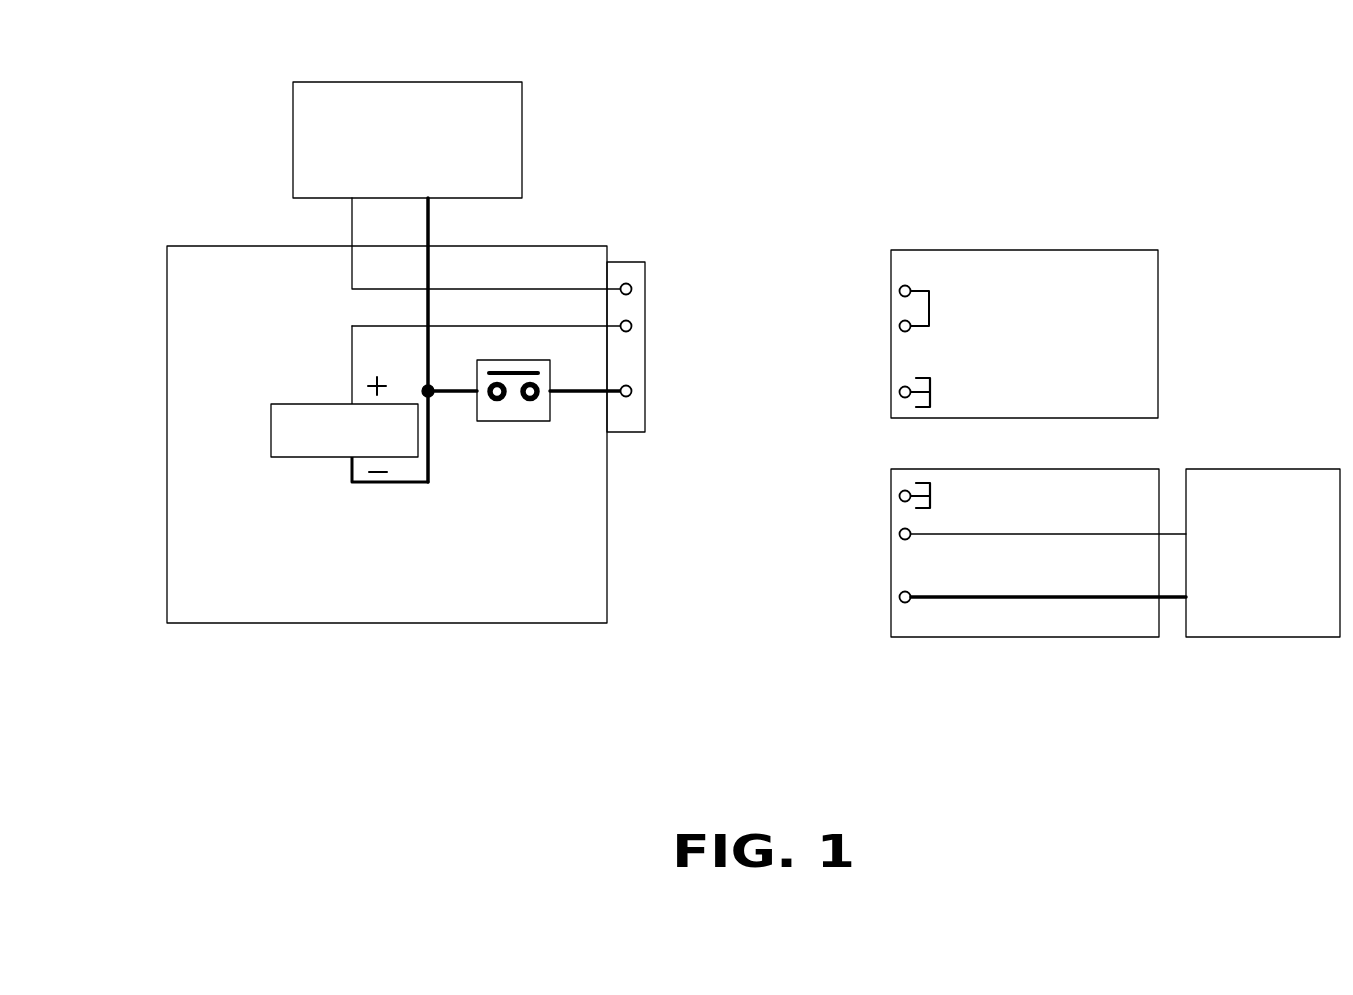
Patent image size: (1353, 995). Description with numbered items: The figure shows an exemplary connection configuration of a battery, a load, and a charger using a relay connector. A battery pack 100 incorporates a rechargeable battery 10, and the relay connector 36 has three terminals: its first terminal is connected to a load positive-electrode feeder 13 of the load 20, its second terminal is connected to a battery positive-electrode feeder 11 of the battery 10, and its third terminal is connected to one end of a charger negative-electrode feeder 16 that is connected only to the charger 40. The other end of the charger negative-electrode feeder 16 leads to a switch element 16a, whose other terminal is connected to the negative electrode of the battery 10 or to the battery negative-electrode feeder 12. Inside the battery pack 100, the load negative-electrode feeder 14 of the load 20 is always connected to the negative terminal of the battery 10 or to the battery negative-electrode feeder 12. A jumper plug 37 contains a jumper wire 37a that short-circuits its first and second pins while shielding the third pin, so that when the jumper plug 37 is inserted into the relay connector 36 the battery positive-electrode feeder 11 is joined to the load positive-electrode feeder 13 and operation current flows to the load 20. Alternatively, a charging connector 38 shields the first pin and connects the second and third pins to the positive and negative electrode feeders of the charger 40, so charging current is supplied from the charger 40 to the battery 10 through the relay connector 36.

The battery pack 100 is at (297, 623).
The battery 10 is at (271, 417).
The battery positive-electrode feeder 11 is at (352, 368).
The battery negative-electrode feeder 12 is at (430, 447).
The load positive-electrode feeder 13 is at (352, 268).
The load negative-electrode feeder 14 is at (430, 268).
The charger negative-electrode feeder 16 is at (567, 393).
The switch element 16a is at (522, 421).
The load 20 is at (450, 82).
The relay connector 36 is at (626, 262).
The jumper plug 37 is at (1001, 250).
The jumper wire 37a is at (929, 310).
The charging connector 38 is at (1013, 637).
The charger 40 is at (1268, 469).